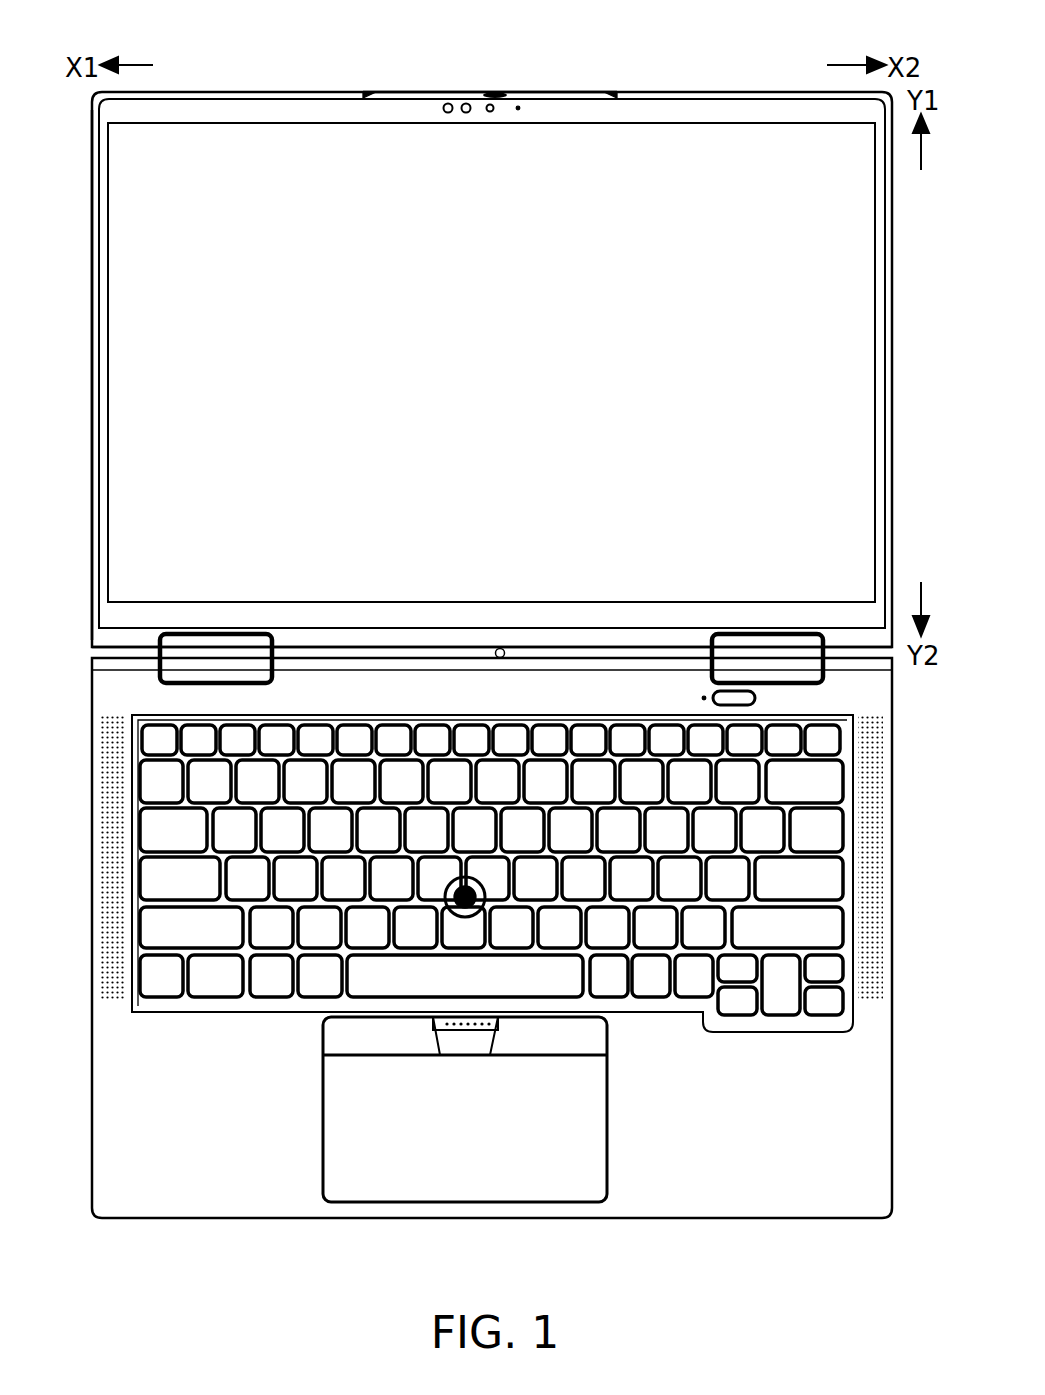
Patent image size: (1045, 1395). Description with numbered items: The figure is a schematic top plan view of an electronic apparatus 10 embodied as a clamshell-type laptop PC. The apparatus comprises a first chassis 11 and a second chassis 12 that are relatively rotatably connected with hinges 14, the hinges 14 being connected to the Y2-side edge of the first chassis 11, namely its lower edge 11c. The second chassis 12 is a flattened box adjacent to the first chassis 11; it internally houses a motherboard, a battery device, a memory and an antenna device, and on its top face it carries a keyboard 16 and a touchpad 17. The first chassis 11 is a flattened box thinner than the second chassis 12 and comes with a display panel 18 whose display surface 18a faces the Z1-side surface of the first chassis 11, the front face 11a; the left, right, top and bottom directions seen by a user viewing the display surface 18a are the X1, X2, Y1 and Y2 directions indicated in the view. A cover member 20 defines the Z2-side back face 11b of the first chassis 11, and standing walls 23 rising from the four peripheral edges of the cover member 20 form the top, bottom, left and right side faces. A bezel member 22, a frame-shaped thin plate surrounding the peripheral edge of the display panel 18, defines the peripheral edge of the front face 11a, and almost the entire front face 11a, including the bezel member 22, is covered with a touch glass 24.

The electronic apparatus 10 is at (79, 30).
The first chassis 11 is at (207, 91).
The front face 11a is at (492, 329).
The back face 11b is at (428, 92).
The lower edge 11c is at (500, 648).
The second chassis 12 is at (228, 1226).
The hinges 14 is at (220, 655).
The keyboard 16 is at (672, 1014).
The touchpad 17 is at (453, 1175).
The display panel 18 is at (672, 146).
The display surface 18a is at (758, 150).
The cover member 20 is at (482, 72).
The bezel member 22 is at (273, 108).
The standing walls 23 is at (91, 262).
The touch glass 24 is at (127, 203).